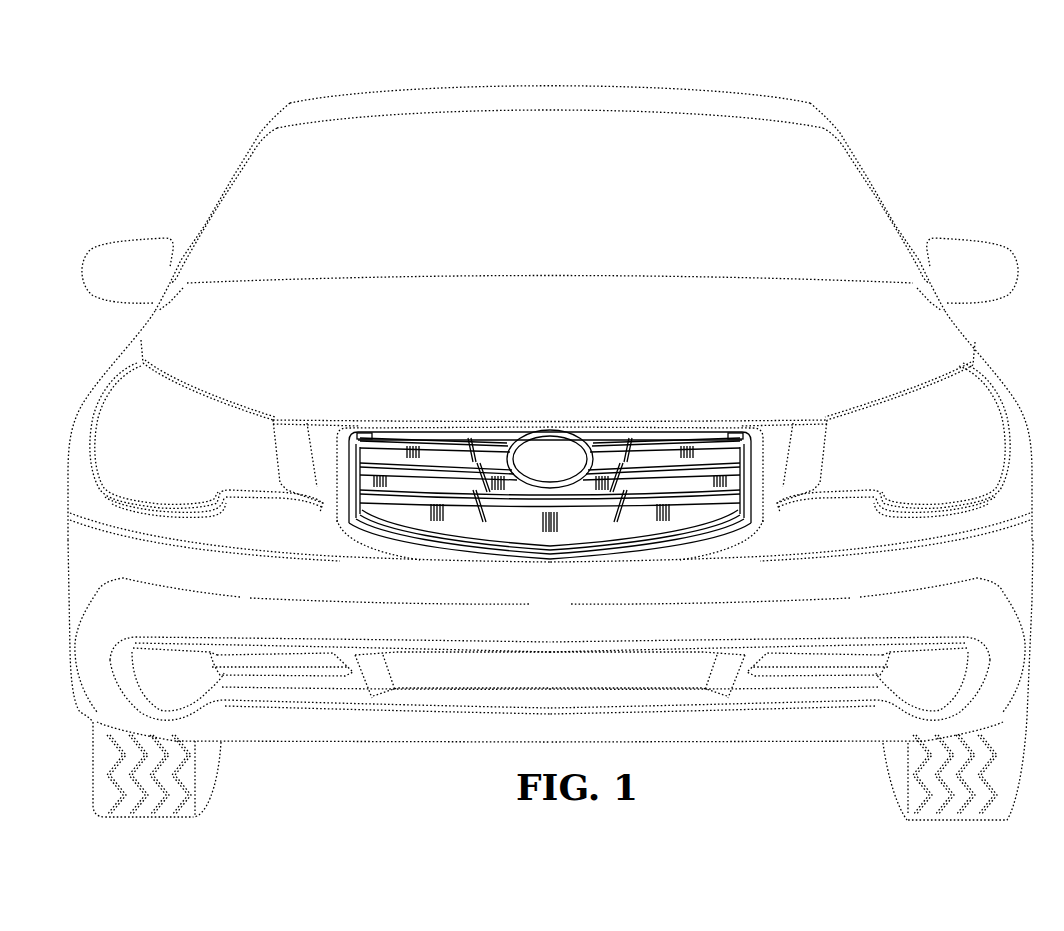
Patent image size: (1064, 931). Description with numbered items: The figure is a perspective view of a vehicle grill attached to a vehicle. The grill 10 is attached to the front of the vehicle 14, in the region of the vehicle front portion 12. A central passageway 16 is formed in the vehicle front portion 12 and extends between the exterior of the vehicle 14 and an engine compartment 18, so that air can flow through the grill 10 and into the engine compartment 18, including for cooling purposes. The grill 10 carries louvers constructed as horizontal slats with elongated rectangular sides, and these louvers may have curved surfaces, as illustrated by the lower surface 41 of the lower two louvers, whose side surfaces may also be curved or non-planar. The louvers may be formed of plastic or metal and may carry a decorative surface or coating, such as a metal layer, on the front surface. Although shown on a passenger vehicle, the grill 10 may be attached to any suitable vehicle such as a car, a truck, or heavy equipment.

The grill 10 is at (760, 496).
The vehicle front portion 12 is at (913, 372).
The vehicle 14 is at (868, 151).
The central passageway 16 is at (337, 507).
The engine compartment 18 is at (604, 412).
The lower surface 41 is at (553, 550).